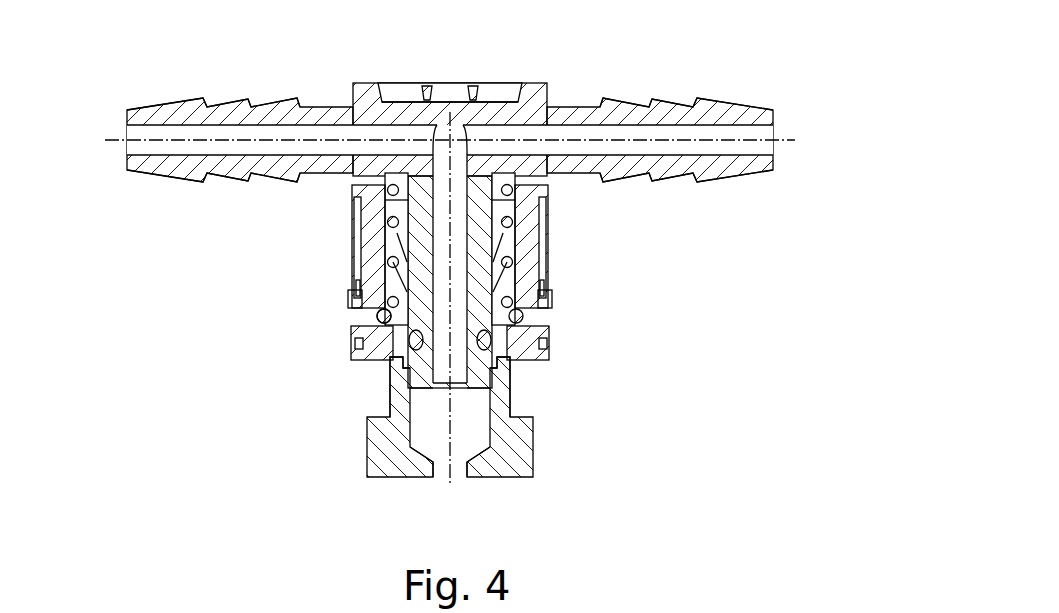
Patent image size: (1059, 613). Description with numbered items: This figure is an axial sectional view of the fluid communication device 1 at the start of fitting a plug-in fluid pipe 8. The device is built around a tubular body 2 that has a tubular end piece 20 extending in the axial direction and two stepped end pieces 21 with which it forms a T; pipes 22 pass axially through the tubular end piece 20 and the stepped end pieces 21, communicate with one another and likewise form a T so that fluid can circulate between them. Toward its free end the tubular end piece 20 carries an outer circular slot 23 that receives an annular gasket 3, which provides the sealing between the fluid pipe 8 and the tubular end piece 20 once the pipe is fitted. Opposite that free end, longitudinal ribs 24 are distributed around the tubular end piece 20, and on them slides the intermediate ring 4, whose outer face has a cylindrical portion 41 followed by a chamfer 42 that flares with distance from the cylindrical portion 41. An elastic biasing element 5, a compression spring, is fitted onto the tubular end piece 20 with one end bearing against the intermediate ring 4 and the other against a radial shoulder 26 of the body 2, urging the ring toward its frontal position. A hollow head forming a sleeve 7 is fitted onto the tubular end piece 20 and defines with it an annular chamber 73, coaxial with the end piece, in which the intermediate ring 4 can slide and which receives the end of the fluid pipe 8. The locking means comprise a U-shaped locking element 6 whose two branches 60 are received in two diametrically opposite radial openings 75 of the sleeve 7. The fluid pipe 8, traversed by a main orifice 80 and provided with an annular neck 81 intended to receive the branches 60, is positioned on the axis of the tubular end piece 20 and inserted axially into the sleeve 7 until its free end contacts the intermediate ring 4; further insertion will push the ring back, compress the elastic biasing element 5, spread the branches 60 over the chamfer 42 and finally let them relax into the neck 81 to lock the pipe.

The fluid communication device 1 is at (128, 59).
The tubular body 2 is at (625, 70).
The annular gasket 3 is at (382, 373).
The intermediate ring 4 is at (505, 290).
The elastic biasing element 5 is at (510, 262).
The locking element 6 is at (348, 316).
The sleeve 7 is at (563, 286).
The fluid pipe 8 is at (525, 463).
The tubular end piece 20 is at (480, 225).
The stepped end pieces 21 is at (237, 100).
The pipes 22 is at (113, 151).
The outer circular slot 23 is at (403, 347).
The longitudinal ribs 24 is at (400, 235).
The radial shoulder 26 is at (393, 178).
The cylindrical portion 41 is at (357, 276).
The chamfer 42 is at (388, 350).
The branches 60 is at (548, 318).
The annular chamber 73 is at (523, 364).
The radial openings 75 is at (331, 302).
The main orifice 80 is at (442, 475).
The annular neck 81 is at (415, 371).